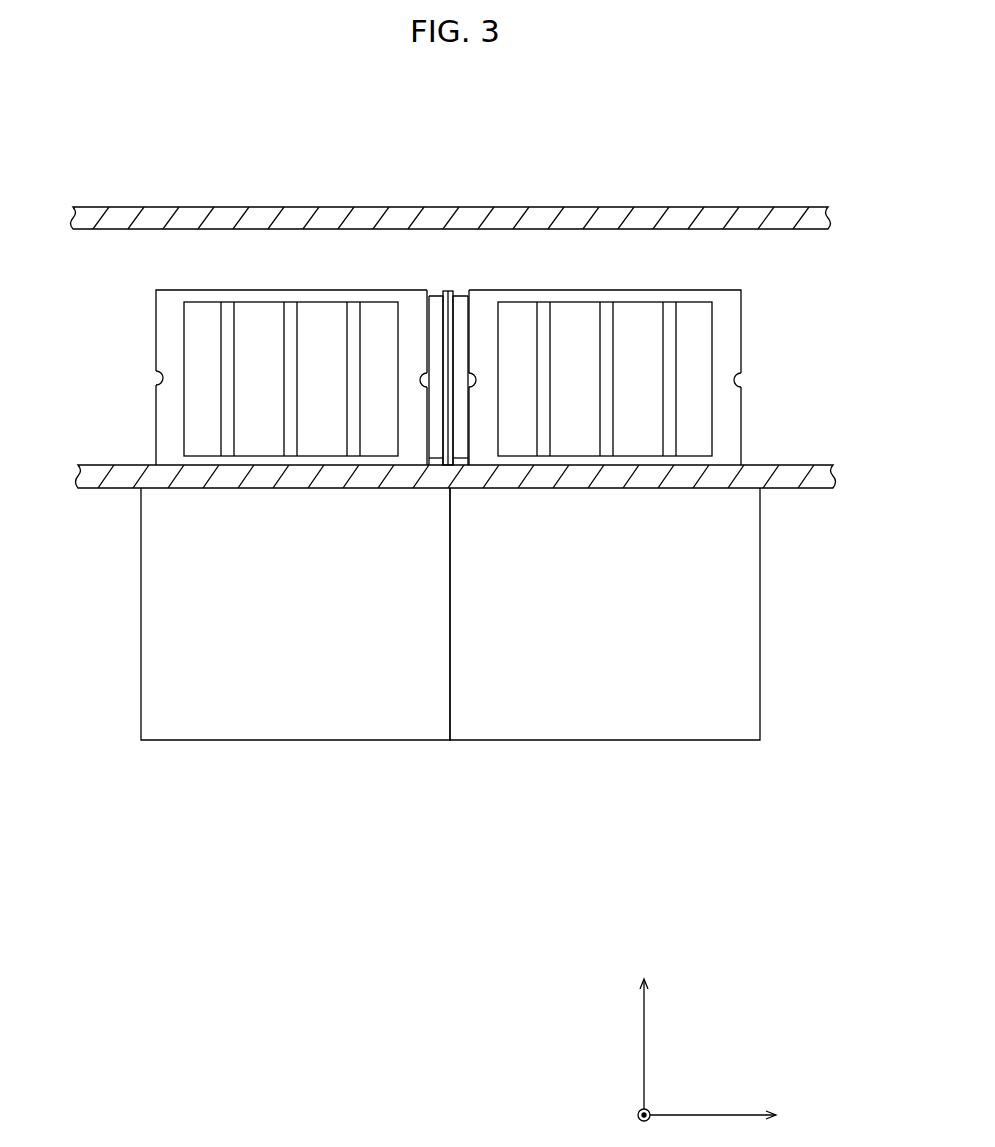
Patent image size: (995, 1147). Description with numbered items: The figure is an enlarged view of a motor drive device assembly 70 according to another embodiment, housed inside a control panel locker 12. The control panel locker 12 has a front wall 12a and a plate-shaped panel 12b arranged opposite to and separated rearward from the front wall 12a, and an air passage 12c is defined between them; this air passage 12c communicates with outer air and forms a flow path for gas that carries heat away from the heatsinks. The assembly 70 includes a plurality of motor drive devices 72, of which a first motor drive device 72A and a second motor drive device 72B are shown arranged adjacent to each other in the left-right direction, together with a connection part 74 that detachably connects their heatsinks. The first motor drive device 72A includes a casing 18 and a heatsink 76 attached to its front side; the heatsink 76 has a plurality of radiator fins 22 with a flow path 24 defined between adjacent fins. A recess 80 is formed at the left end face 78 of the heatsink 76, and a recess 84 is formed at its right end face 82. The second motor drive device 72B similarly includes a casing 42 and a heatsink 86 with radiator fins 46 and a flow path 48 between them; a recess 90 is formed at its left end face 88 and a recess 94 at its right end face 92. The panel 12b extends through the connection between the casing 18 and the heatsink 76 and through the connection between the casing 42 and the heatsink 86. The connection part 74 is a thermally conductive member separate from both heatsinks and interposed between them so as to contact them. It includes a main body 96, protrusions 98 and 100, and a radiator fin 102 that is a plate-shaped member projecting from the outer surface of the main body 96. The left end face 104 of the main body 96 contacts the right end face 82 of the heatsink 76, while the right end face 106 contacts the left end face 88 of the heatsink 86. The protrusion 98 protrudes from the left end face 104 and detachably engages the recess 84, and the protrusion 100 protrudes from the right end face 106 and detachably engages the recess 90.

The control panel locker 12 is at (771, 202).
The front wall 12a is at (602, 222).
The panel 12b is at (790, 483).
The air passage 12c is at (823, 264).
The casing 18 is at (162, 657).
The radiator fins 22 is at (348, 318).
The flow path 24 is at (374, 440).
The casing 42 is at (675, 673).
The radiator fins 46 is at (672, 310).
The flow path 48 is at (692, 443).
The motor drive device assembly 70 is at (656, 842).
The motor drive devices 72 is at (340, 867).
The first motor drive device 72A is at (312, 786).
The second motor drive device 72B is at (529, 786).
The connection part 74 is at (444, 272).
The heatsink 76 is at (212, 287).
The left end face 78 is at (155, 342).
The recess 80 is at (157, 380).
The right end face 82 is at (441, 460).
The recess 84 is at (430, 392).
The heatsink 86 is at (702, 282).
The left end face 88 is at (457, 460).
The recess 90 is at (466, 392).
The right end face 92 is at (743, 320).
The recess 94 is at (743, 380).
The main body 96 is at (435, 293).
The protrusion 98 is at (423, 368).
The protrusion 100 is at (543, 317).
The radiator fin 102 is at (450, 290).
The left end face 104 is at (427, 318).
The right end face 106 is at (477, 370).